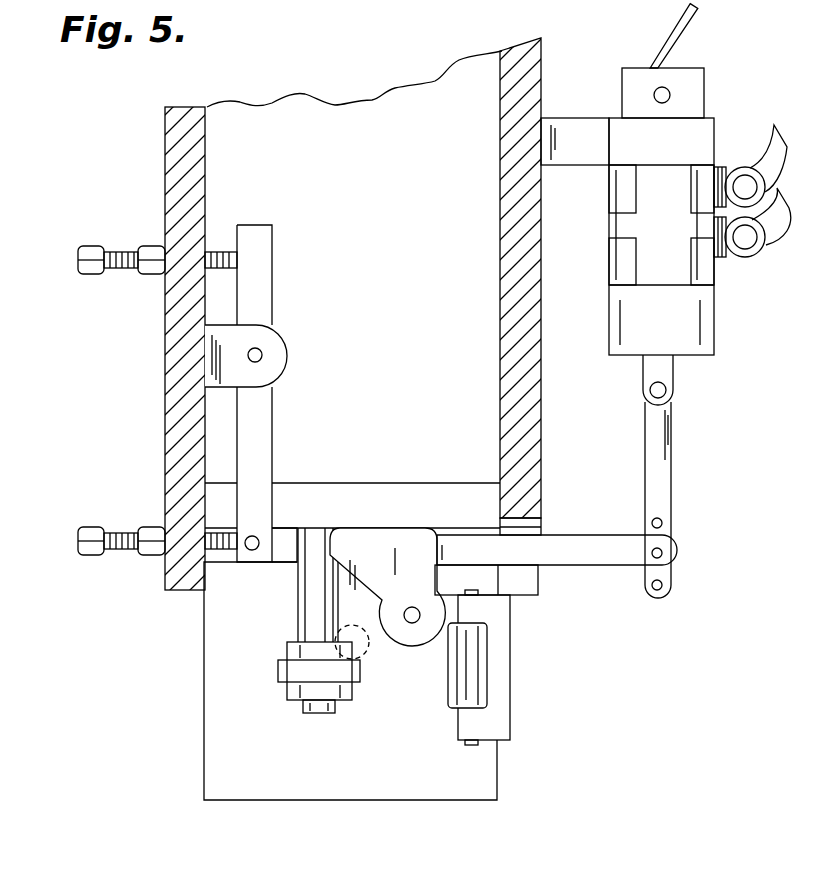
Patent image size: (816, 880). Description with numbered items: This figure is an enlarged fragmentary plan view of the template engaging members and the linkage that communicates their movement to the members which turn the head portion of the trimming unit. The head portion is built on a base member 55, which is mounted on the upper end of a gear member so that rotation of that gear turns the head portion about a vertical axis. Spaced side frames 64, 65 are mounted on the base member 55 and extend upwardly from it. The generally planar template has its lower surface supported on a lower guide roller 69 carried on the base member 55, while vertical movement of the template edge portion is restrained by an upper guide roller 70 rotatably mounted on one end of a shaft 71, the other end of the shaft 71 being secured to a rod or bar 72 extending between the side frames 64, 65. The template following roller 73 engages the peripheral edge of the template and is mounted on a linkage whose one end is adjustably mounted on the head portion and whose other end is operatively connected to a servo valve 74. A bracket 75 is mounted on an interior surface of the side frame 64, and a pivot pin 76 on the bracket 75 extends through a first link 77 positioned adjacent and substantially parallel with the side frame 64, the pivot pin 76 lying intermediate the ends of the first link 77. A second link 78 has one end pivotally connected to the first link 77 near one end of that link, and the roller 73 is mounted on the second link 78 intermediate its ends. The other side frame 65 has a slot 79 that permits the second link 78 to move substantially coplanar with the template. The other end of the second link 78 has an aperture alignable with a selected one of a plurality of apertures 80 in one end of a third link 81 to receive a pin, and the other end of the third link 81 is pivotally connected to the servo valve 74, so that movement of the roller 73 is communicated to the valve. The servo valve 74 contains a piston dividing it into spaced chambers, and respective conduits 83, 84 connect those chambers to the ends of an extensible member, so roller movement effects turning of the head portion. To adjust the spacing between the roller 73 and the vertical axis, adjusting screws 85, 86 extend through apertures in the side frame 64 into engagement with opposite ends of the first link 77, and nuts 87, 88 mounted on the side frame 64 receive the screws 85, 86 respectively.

The base member 55 is at (357, 800).
The side frame 64 is at (165, 390).
The side frame 65 is at (541, 442).
The lower guide roller 69 is at (447, 688).
The upper guide roller 70 is at (278, 669).
The shaft 71 is at (298, 610).
The rod or bar 72 is at (356, 500).
The roller 73 is at (418, 647).
The servo valve 74 is at (705, 315).
The bracket 75 is at (287, 355).
The pivot pin 76 is at (262, 350).
The first link 77 is at (253, 437).
The second link 78 is at (282, 540).
The slot 79 is at (528, 582).
The apertures 80 is at (666, 523).
The third link 81 is at (661, 450).
The conduit 83 is at (783, 208).
The conduit 84 is at (752, 165).
The adjusting screw 85 is at (130, 260).
The adjusting screw 86 is at (78, 536).
The nut 87 is at (155, 245).
The nut 88 is at (148, 557).